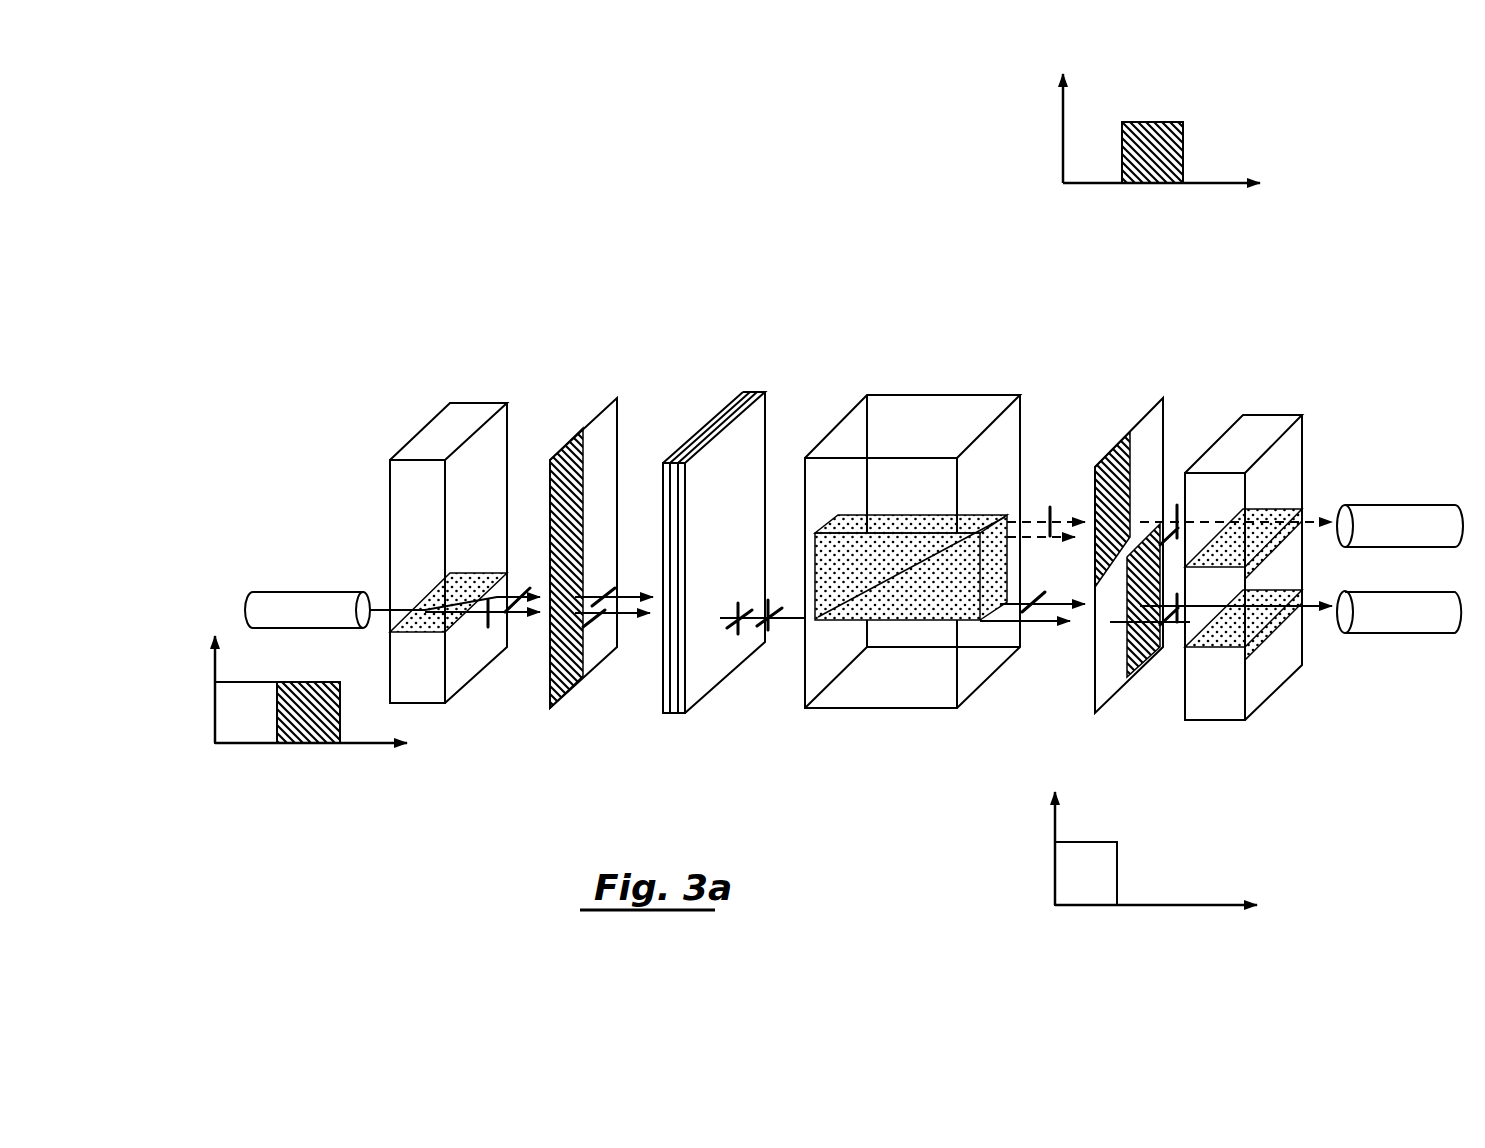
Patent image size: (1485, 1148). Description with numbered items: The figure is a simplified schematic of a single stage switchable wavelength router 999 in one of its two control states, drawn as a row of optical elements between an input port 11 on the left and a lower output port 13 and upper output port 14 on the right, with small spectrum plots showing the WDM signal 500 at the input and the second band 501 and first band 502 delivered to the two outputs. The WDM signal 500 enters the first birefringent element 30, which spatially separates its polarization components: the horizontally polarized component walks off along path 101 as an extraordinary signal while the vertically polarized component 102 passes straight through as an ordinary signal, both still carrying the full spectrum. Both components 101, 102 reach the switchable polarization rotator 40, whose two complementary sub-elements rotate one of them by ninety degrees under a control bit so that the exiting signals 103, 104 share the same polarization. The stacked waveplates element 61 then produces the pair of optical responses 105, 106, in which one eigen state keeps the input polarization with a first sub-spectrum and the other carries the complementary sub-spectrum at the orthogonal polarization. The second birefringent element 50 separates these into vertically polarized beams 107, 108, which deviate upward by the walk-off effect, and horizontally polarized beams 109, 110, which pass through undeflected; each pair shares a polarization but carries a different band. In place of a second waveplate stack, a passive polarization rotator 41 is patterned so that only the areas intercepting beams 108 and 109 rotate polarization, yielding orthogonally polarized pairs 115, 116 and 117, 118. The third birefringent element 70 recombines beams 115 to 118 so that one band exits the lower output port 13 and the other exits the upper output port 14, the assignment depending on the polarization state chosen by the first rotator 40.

The wavelength router 999 is at (545, 222).
The input port 11 is at (307, 563).
The lower output port 13 is at (1399, 628).
The upper output port 14 is at (1400, 482).
The first birefringent element 30 is at (472, 408).
The switchable polarization rotator 40 is at (605, 440).
The passive polarization rotator 41 is at (1160, 420).
The second birefringent element 50 is at (925, 415).
The stacked waveplates element 61 is at (755, 440).
The third birefringent element 70 is at (1265, 430).
The horizontally polarized component path 101 is at (537, 590).
The vertically polarized component 102 is at (516, 627).
The rotator output signal 103 is at (648, 590).
The rotator output signal 104 is at (640, 630).
The optical response 105 is at (773, 590).
The optical response 106 is at (762, 625).
The vertically polarized beam 107 is at (1068, 508).
The vertically polarized beam 108 is at (1068, 546).
The horizontally polarized beam 109 is at (1070, 632).
The horizontally polarized beam 110 is at (1025, 640).
The output beam of passive rotator 115 is at (1193, 520).
The output beam of passive rotator 116 is at (1137, 537).
The output beam of passive rotator 117 is at (1178, 645).
The output beam of passive rotator 118 is at (1140, 665).
The WDM signal 500 is at (280, 706).
The first band 501 is at (1128, 145).
The second band 502 is at (1124, 866).